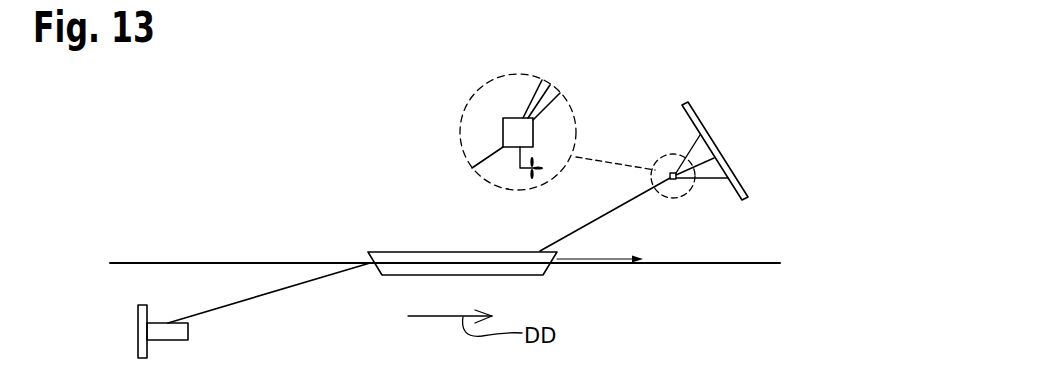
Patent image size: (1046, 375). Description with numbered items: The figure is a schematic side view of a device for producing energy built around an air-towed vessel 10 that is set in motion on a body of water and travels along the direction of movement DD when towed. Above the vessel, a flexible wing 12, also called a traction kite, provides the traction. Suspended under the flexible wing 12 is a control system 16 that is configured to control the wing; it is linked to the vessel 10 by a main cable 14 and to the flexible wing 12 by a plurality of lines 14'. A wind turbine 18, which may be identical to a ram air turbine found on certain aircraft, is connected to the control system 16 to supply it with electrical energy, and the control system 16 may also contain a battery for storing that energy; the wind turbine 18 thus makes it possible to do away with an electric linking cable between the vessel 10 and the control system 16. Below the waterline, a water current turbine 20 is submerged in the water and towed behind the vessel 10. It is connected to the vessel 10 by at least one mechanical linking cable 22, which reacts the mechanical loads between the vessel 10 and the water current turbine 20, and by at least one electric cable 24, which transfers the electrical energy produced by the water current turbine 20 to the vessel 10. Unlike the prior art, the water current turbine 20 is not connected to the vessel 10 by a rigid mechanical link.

The air-towed vessel 10 is at (402, 246).
The flexible wing 12 is at (716, 113).
The main cable 14 is at (620, 219).
The lines 14' is at (726, 193).
The control system 16 is at (494, 119).
The wind turbine 18 is at (539, 192).
The water current turbine 20 is at (128, 326).
The mechanical linking cable 22 is at (269, 318).
The electric cable 24 is at (308, 296).